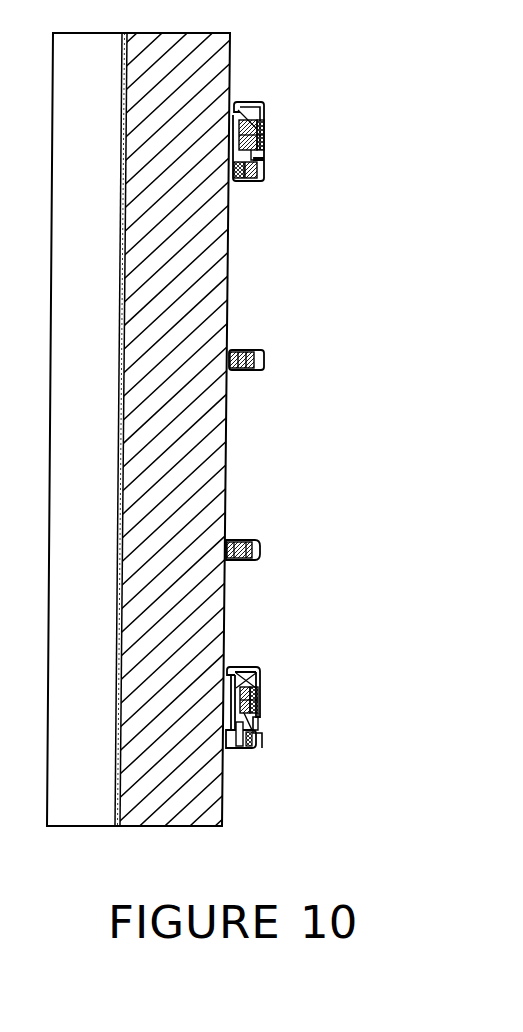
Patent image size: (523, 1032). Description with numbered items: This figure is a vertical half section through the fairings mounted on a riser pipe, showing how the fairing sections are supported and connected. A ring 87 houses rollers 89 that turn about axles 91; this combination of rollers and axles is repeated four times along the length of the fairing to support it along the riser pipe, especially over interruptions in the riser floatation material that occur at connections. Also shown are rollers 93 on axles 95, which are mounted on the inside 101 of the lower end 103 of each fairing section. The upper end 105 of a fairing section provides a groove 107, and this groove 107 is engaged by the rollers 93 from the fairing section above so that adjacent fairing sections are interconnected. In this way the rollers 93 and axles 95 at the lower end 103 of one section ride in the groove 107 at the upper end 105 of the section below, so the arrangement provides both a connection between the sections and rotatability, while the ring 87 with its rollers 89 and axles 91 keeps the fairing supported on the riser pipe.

The ring 87 is at (264, 358).
The rollers 89 is at (262, 352).
The axles 91 is at (247, 351).
The rollers 93 is at (263, 122).
The axles 95 is at (263, 137).
The inside 101 is at (259, 723).
The lower end 103 is at (258, 713).
The upper end 105 is at (231, 667).
The groove 107 is at (245, 670).